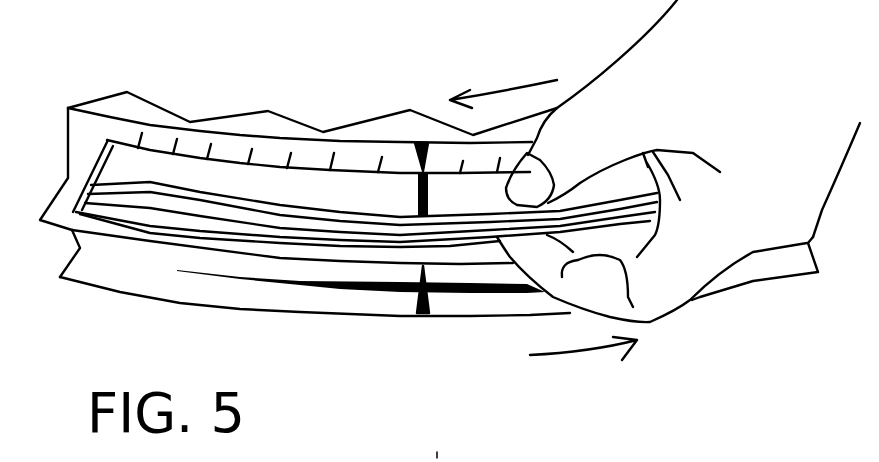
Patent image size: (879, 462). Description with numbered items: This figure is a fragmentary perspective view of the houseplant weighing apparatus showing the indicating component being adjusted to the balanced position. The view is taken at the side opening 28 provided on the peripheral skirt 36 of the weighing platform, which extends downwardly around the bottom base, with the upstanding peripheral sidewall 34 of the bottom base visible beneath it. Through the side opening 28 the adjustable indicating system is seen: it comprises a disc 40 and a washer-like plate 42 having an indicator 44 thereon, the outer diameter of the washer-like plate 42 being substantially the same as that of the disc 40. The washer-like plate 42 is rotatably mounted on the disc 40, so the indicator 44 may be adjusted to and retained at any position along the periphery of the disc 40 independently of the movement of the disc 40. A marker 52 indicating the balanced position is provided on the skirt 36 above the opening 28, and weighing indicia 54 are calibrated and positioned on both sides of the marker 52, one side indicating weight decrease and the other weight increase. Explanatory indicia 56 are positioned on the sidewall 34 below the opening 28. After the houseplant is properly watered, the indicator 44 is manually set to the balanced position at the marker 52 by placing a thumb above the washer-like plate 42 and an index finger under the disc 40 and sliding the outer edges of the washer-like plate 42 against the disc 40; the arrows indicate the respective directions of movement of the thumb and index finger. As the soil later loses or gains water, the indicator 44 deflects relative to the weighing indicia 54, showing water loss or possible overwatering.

The peripheral skirt 36 is at (90, 127).
The weighing indicia 54 is at (328, 151).
The marker 52 is at (413, 157).
The indicator 44 is at (432, 208).
The explanatory indicia 56 is at (412, 297).
The washer-like plate 42 is at (228, 193).
The disc 40 is at (230, 213).
The side opening 28 is at (155, 212).
The peripheral sidewall 34 is at (80, 277).